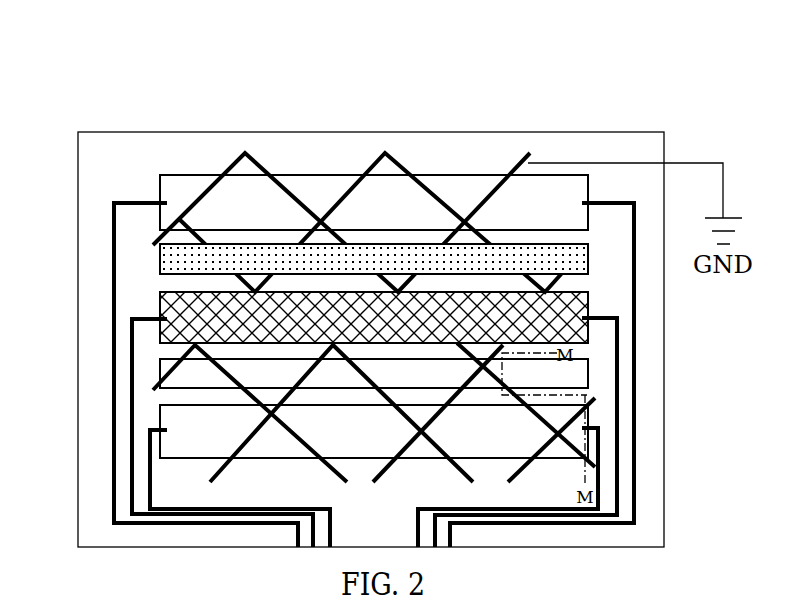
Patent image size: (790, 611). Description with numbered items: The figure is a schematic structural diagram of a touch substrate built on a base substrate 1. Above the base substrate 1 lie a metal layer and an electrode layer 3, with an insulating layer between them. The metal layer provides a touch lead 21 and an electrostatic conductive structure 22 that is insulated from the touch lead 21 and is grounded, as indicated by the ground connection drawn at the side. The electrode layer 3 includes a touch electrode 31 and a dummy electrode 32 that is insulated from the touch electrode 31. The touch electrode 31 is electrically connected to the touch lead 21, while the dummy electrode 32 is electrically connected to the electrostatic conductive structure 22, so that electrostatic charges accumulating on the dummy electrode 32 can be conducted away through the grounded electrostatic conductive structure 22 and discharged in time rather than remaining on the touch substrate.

The base substrate 1 is at (128, 187).
The touch lead 21 is at (617, 203).
The electrostatic conductive structure 22 is at (512, 172).
The electrode layer 3 is at (370, 151).
The touch electrode 31 is at (325, 197).
The dummy electrode 32 is at (260, 258).